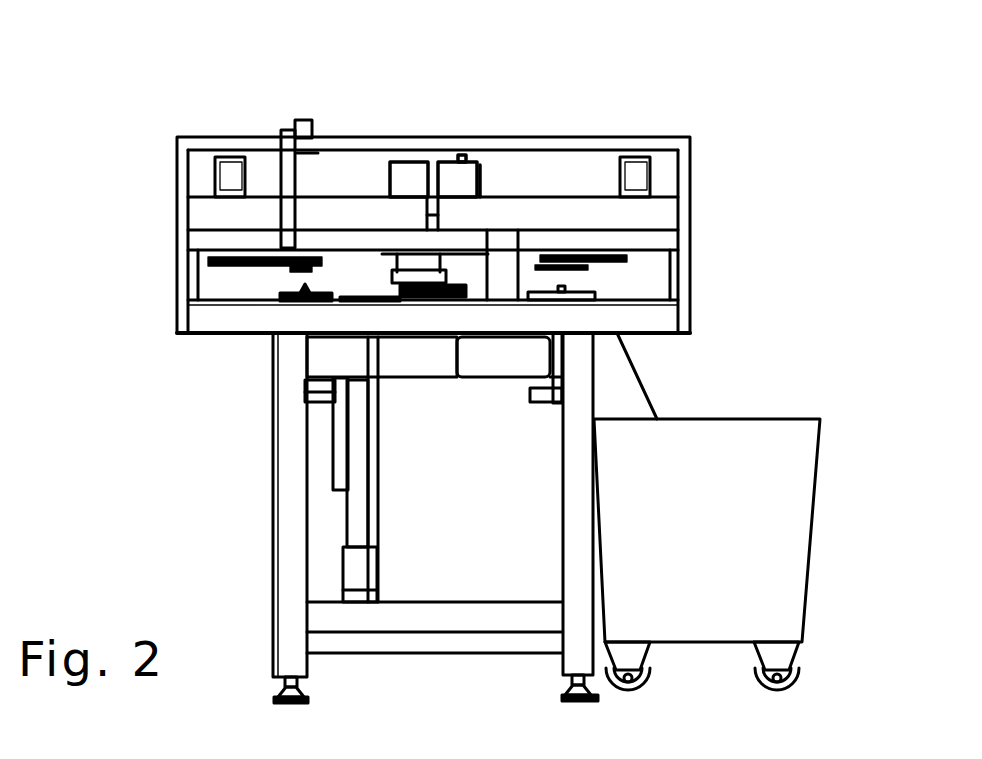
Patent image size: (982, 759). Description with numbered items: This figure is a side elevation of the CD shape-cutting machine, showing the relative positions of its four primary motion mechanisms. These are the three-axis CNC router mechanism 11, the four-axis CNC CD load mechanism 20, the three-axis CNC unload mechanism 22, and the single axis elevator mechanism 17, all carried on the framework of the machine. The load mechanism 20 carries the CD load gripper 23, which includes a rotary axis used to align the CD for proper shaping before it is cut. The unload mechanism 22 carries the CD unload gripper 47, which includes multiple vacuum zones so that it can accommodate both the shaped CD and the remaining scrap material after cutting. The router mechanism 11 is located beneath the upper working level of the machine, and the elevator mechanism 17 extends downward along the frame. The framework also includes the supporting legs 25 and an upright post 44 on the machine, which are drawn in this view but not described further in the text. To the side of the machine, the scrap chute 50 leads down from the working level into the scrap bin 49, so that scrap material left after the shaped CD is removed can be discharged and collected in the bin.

The 3-Axis CNC router mechanism 11 is at (507, 358).
The single axis elevator mechanism 17 is at (355, 440).
The 4-Axis CNC CD load mechanism 20 is at (380, 207).
The 3-Axis CNC unload mechanism 22 is at (505, 205).
The CD load gripper 23 is at (258, 265).
The machine frame leg 25 is at (290, 570).
The support post 44 is at (282, 140).
The CD unload gripper 47 is at (613, 250).
The scrap bin 49 is at (784, 478).
The scrap chute 50 is at (633, 390).